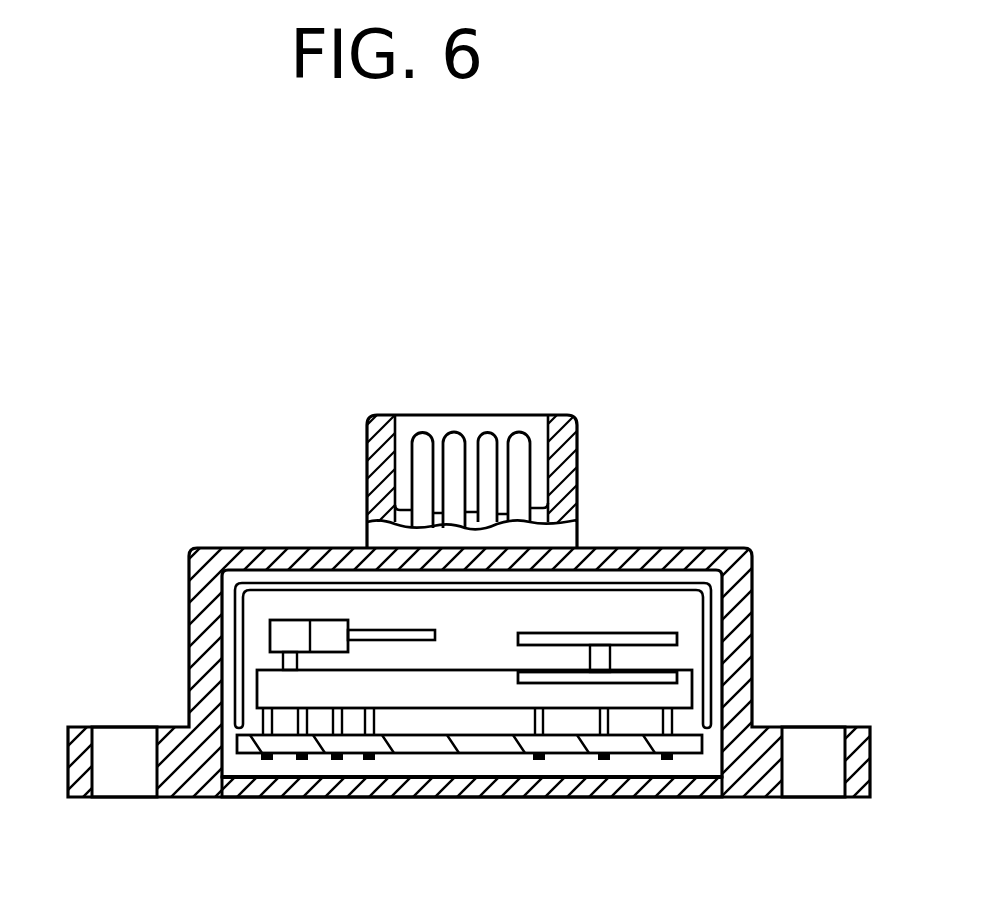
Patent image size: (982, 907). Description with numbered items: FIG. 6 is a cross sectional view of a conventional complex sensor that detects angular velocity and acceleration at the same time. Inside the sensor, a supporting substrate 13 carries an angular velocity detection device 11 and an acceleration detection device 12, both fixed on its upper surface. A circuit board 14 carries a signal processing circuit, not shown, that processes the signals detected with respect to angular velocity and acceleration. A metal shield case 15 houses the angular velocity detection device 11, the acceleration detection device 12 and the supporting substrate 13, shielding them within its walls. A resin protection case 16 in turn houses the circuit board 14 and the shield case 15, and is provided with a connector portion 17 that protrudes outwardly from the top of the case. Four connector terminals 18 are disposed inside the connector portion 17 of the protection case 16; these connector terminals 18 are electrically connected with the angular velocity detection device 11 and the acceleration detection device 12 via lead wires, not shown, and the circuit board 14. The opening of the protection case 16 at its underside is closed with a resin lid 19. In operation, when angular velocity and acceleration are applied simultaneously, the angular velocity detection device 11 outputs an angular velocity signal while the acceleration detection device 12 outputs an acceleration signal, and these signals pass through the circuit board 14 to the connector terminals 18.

The angular velocity detection device 11 is at (297, 640).
The acceleration detection device 12 is at (677, 634).
The supporting substrate 13 is at (443, 687).
The circuit board 14 is at (497, 745).
The metal shield case 15 is at (650, 587).
The resin protection case 16 is at (283, 548).
The connector portion 17 is at (577, 437).
The connector terminals 18 is at (493, 435).
The resin lid 19 is at (572, 787).